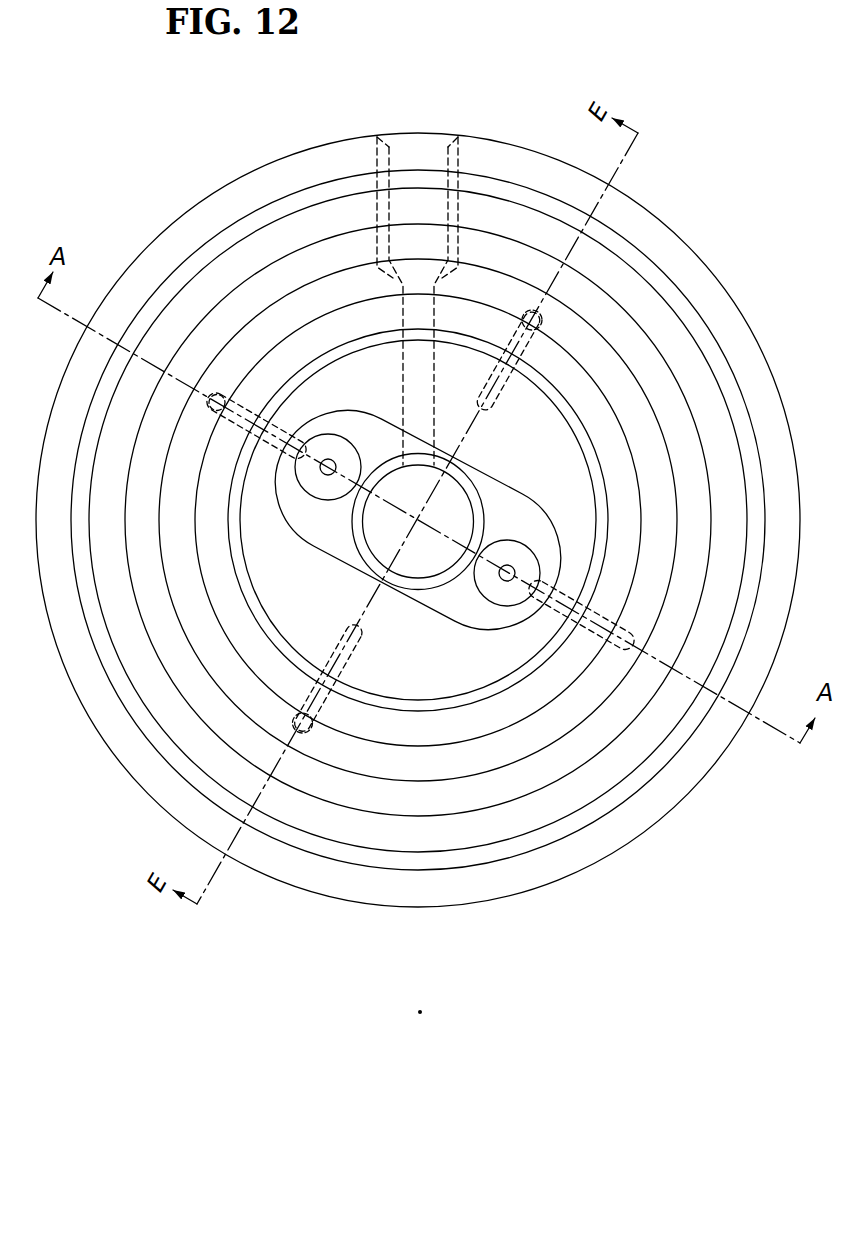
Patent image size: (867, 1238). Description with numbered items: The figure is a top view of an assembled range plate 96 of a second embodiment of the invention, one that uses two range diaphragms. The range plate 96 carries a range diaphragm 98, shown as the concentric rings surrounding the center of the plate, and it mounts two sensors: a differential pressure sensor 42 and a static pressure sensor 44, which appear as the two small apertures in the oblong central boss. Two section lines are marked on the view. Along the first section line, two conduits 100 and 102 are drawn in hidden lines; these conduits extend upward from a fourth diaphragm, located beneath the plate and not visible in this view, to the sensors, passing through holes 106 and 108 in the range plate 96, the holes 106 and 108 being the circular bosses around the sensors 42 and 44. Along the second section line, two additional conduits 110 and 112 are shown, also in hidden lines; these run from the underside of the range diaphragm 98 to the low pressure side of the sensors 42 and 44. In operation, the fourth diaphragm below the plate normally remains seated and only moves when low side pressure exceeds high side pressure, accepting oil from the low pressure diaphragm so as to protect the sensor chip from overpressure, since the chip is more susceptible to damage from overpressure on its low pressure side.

The differential pressure sensor 42 is at (340, 477).
The static pressure sensor 44 is at (512, 550).
The range plate 96 is at (768, 367).
The range diaphragm 98 is at (192, 673).
The conduit 100 is at (248, 413).
The conduit 102 is at (588, 633).
The hole 106 is at (305, 448).
The hole 108 is at (532, 588).
The conduit 110 is at (325, 700).
The conduit 112 is at (527, 348).